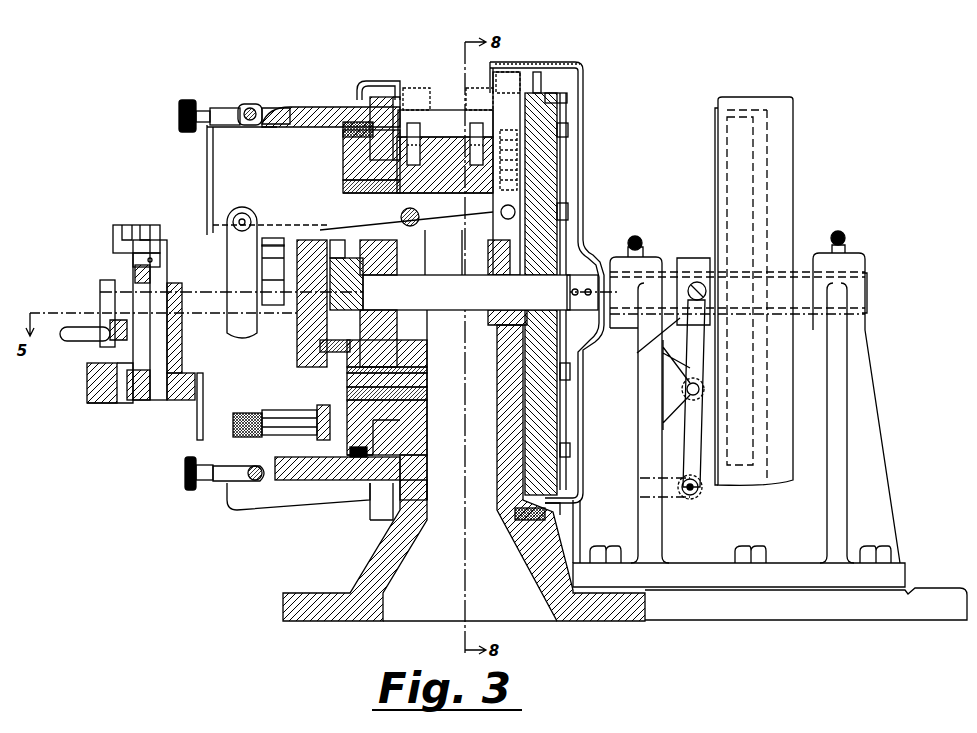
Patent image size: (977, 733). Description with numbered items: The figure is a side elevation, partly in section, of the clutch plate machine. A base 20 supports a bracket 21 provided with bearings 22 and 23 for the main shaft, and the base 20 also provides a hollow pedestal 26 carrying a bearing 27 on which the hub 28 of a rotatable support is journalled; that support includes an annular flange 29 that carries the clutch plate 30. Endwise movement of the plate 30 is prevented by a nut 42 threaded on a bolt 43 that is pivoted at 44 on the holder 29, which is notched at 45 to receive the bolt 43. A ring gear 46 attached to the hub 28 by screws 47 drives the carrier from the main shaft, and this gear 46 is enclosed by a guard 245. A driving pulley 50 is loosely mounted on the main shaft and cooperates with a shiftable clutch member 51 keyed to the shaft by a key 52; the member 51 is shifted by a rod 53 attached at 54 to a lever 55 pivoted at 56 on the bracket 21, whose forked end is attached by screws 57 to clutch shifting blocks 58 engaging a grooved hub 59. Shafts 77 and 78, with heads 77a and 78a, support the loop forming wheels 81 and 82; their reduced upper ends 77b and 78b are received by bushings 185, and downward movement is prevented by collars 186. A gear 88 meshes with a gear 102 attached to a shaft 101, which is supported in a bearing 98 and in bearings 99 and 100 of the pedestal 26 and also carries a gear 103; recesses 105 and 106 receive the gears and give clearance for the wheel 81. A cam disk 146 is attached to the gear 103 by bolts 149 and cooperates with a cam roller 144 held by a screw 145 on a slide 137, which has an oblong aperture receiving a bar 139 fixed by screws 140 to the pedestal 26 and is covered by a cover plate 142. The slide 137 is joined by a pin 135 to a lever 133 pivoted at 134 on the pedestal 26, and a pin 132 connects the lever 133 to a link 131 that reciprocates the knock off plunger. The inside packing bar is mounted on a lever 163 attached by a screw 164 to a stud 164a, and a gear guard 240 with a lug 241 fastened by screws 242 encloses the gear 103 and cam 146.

The base 20 is at (283, 596).
The bracket 21 is at (837, 528).
The bearing 22 is at (647, 257).
The bearing 23 is at (848, 275).
The hollow pedestal 26 is at (410, 428).
The bearing 27 is at (385, 396).
The hub 28 is at (343, 160).
The annular flange 29 is at (305, 107).
The clutch plate 30 is at (207, 152).
The nut 42 is at (198, 104).
The bolt 43 is at (222, 112).
The pivot 44 is at (250, 107).
The notch 45 is at (272, 112).
The ring gear 46 is at (378, 97).
The screw 47 is at (350, 122).
The driving pulley 50 is at (736, 97).
The shiftable clutch member 51 is at (715, 120).
The key 52 is at (672, 272).
The rod 53 is at (250, 482).
The attachment point 54 is at (690, 495).
The lever 55 is at (697, 465).
The pivot 56 is at (683, 393).
The screw 57 is at (698, 282).
The clutch shifting block 58 is at (686, 258).
The grooved hub 59 is at (645, 348).
The shaft 77 is at (250, 437).
The head 77a is at (295, 435).
The reduced upper end 77b is at (270, 245).
The shaft 78 is at (160, 400).
The head 78a is at (135, 403).
The reduced upper end 78b is at (165, 260).
The loop forming wheel 81 is at (328, 480).
The loop forming wheel 82 is at (200, 440).
The gear 88 is at (340, 250).
The bearing 98 is at (310, 240).
The bearing 99 is at (397, 268).
The bearing 100 is at (497, 316).
The shaft 101 is at (470, 275).
The gear 102 is at (350, 345).
The gear 103 is at (567, 98).
The recess 105 is at (350, 346).
The recess 106 is at (350, 369).
The link 131 is at (222, 247).
The pin 132 is at (240, 213).
The lever 133 is at (325, 193).
The pivot 134 is at (419, 217).
The pin 135 is at (501, 213).
The slide 137 is at (500, 100).
The bar 139 is at (452, 110).
The screw 140 is at (413, 123).
The cover plate 142 is at (520, 62).
The cam roller 144 is at (520, 82).
The screw 145 is at (541, 82).
The cam disk 146 is at (545, 170).
The bolt 149 is at (568, 130).
The lever 163 is at (220, 482).
The screw 164 is at (200, 482).
The stud 164a is at (280, 510).
The bushing 185 is at (133, 260).
The collar 186 is at (275, 238).
The gear guard 240 is at (583, 72).
The lug 241 is at (540, 518).
The screw 242 is at (560, 510).
The guard 245 is at (365, 81).